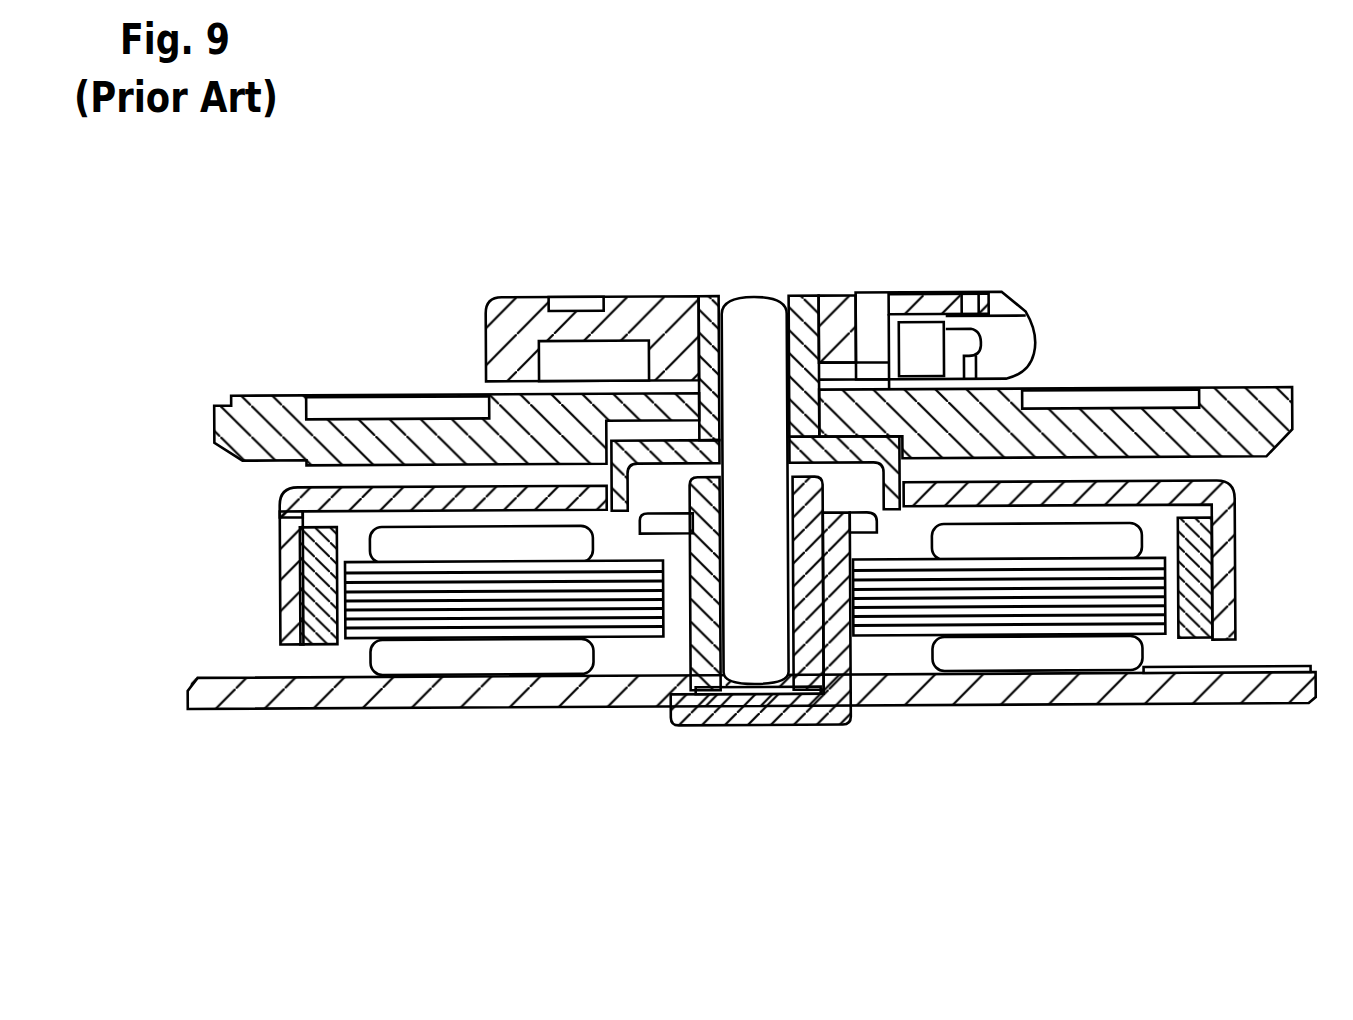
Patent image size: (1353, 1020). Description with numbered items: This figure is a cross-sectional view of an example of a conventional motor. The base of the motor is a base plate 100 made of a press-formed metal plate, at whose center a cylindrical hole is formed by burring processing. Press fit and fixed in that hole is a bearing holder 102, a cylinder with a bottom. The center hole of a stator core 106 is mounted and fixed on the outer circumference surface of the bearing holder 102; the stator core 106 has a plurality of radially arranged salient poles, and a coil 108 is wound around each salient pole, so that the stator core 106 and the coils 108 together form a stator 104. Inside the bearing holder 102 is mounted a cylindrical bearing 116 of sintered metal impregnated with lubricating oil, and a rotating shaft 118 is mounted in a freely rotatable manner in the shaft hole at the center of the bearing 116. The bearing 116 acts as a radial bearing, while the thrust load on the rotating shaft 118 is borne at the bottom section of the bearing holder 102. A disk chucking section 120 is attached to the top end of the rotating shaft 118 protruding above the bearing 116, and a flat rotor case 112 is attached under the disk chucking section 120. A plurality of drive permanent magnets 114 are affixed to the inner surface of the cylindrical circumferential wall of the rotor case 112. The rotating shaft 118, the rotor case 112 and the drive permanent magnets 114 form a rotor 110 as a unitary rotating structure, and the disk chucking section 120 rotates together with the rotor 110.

The base plate 100 is at (1113, 692).
The bearing holder 102 is at (797, 713).
The stator 104 is at (1147, 548).
The stator core 106 is at (1183, 572).
The coil 108 is at (1005, 653).
The rotor 110 is at (262, 513).
The rotor case 112 is at (290, 557).
The drive permanent magnet 114 is at (313, 600).
The bearing 116 is at (705, 665).
The rotating shaft 118 is at (732, 307).
The disk chucking section 120 is at (1048, 346).